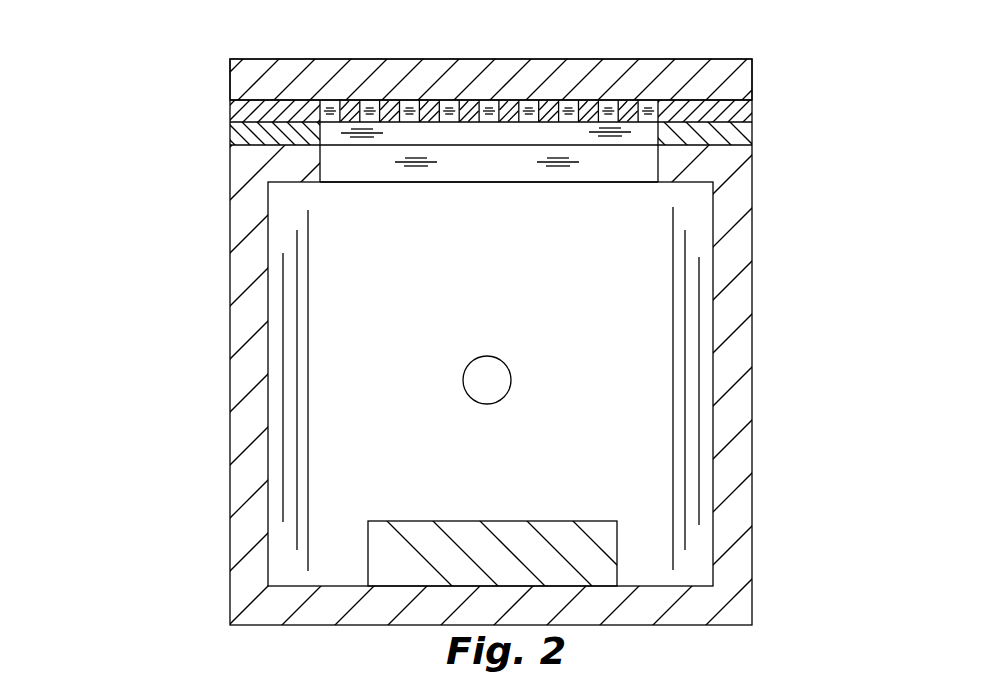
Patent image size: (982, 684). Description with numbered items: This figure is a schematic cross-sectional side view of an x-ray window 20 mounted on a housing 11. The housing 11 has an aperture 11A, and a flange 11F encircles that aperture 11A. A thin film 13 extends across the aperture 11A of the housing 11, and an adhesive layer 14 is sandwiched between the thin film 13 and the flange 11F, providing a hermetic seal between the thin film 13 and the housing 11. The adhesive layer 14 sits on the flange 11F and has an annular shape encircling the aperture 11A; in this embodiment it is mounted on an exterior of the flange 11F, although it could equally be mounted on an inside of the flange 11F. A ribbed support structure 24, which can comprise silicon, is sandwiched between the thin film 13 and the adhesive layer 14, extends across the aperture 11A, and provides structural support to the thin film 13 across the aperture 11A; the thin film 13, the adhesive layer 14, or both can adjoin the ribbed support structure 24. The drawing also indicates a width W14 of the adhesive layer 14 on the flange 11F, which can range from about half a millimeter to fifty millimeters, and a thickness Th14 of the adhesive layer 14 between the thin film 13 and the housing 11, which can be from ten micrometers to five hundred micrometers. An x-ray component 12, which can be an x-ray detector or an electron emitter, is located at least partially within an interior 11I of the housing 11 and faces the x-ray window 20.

The housing 11 is at (472, 617).
The x-ray component 12 is at (472, 565).
The thin film 13 is at (472, 94).
The adhesive layer 14 is at (237, 135).
The x-ray window 20 is at (120, 146).
The ribbed support structure 24 is at (410, 112).
The flange 11F is at (323, 172).
The aperture 11A is at (500, 232).
The interior 11I is at (487, 380).
The thickness of the adhesive layer Th14 is at (253, 172).
The width of the adhesive layer W14 is at (688, 133).